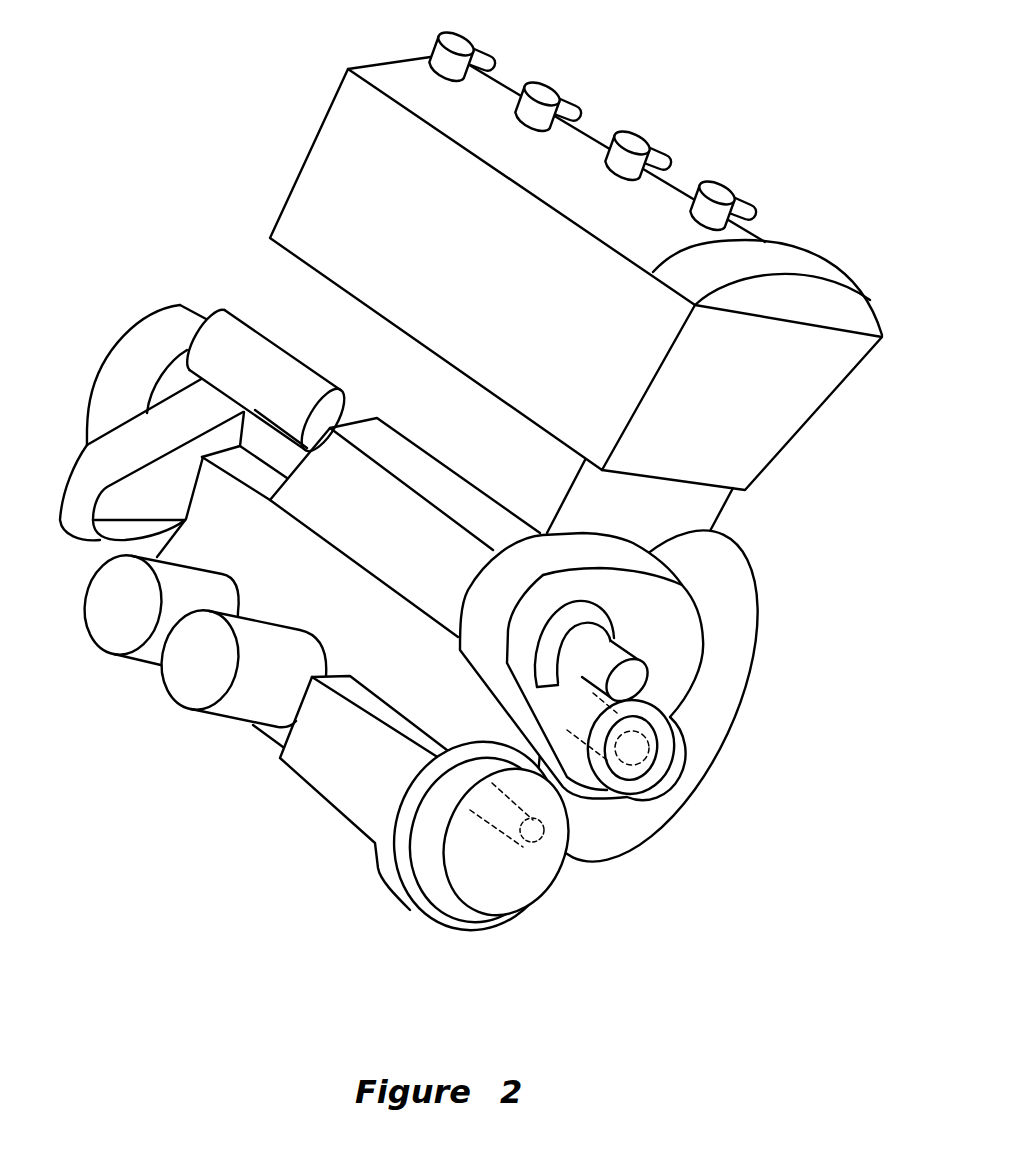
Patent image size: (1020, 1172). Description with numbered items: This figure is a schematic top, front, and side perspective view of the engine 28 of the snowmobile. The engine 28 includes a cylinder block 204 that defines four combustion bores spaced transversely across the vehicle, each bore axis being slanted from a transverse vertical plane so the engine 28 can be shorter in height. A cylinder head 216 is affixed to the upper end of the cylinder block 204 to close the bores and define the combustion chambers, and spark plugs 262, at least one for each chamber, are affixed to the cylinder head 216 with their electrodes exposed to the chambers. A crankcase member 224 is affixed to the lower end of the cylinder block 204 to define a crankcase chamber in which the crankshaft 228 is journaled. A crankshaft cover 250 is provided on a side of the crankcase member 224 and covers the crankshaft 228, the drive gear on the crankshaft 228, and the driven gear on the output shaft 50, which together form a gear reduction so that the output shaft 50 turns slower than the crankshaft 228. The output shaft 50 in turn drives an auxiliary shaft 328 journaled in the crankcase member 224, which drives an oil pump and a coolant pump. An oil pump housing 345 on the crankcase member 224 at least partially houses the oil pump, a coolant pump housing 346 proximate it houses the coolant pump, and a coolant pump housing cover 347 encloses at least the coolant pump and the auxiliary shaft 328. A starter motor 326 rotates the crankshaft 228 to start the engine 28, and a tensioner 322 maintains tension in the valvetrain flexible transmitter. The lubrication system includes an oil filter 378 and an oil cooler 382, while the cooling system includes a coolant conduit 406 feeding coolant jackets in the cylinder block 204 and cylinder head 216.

The engine 28 is at (459, 515).
The cylinder block 204 is at (258, 268).
The cylinder head 216 is at (317, 168).
The spark plugs 262 is at (627, 143).
The tensioner 322 is at (165, 328).
The starter motor 326 is at (302, 380).
The crankcase member 224 is at (92, 532).
The oil cooler 382 is at (107, 628).
The oil filter 378 is at (242, 700).
The oil pump housing 345 is at (335, 777).
The coolant pump housing 346 is at (467, 850).
The coolant pump housing cover 347 is at (488, 905).
The auxiliary shaft 328 is at (537, 843).
The coolant conduit 406 is at (587, 840).
The crankshaft cover 250 is at (663, 683).
The output shaft 50 is at (610, 657).
The crankshaft 228 is at (648, 750).